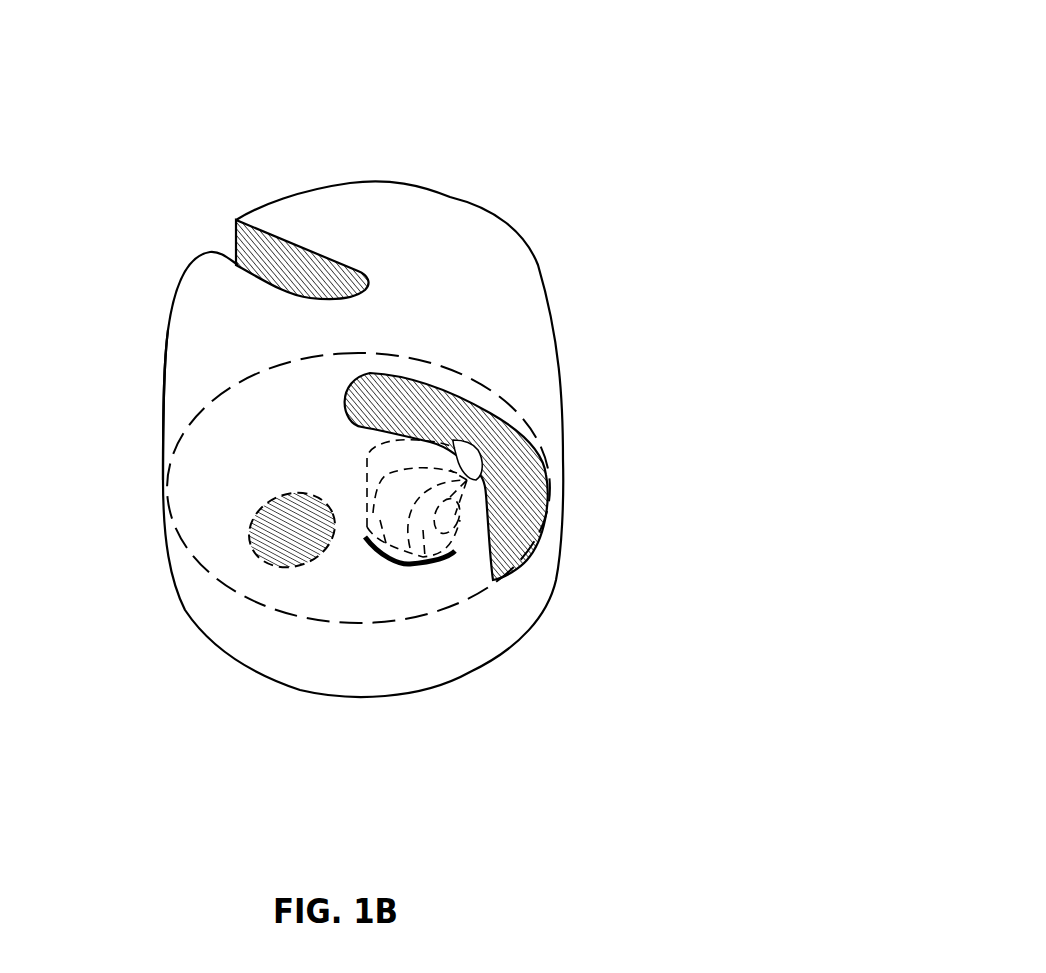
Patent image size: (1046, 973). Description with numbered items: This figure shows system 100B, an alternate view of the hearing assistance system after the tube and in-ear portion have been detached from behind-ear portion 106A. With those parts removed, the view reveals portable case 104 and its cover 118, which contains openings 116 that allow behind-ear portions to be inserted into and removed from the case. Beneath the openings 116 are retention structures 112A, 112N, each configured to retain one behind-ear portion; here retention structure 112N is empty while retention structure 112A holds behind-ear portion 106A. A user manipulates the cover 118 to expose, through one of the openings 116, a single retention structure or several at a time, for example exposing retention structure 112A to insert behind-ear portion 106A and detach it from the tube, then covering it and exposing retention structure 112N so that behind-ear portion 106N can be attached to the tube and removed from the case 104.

The system 100B is at (597, 65).
The portable case 104 is at (181, 604).
The cover 118 is at (166, 353).
The openings 116 is at (415, 390).
The behind-ear portion 106A is at (482, 455).
The behind-ear portion 106N is at (196, 508).
The retention structure 112A is at (452, 566).
The retention structure 112N is at (304, 555).